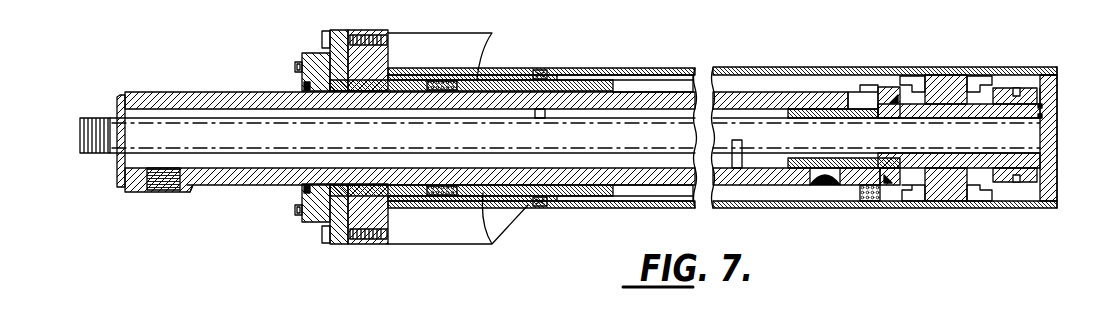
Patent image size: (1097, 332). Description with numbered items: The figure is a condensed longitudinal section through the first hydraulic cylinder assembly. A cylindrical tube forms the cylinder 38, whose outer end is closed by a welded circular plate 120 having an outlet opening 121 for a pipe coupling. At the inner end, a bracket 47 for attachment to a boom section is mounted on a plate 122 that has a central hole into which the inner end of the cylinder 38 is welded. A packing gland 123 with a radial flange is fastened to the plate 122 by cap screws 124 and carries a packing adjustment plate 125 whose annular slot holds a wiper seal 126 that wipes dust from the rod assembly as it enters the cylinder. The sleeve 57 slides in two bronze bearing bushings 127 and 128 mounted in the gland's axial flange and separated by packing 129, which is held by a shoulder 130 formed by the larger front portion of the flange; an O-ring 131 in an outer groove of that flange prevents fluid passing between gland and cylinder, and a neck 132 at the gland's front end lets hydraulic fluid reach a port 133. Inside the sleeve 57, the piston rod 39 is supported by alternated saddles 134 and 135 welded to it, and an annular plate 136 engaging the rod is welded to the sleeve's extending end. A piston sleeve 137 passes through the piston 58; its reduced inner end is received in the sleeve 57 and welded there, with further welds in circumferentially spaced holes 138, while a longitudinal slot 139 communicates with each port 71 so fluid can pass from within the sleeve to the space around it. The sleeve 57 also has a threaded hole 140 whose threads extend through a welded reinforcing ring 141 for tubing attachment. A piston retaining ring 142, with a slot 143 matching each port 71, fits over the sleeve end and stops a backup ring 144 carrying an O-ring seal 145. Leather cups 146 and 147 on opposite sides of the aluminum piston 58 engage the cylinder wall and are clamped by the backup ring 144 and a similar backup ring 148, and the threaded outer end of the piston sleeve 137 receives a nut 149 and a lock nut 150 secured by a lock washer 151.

The cylinder 38 is at (640, 68).
The piston rod 39 is at (108, 125).
The bracket 47 is at (440, 33).
The sleeve 57 is at (215, 92).
The piston 58 is at (945, 85).
The port 71 is at (853, 95).
The circular plate 120 is at (1052, 163).
The outlet opening 121 is at (1057, 100).
The plate 122 is at (388, 50).
The packing gland 123 is at (340, 220).
The cap screws 124 is at (326, 34).
The packing adjustment plate 125 is at (305, 60).
The wiper seal 126 is at (306, 84).
The bearing bushing 127 is at (410, 192).
The bearing bushing 128 is at (459, 225).
The packing 129 is at (443, 80).
The shoulder 130 is at (528, 72).
The O-ring 131 is at (538, 70).
The neck 132 is at (585, 80).
The port 133 is at (595, 208).
The saddle 134 is at (536, 114).
The saddle 135 is at (742, 148).
The annular plate 136 is at (118, 100).
The piston sleeve 137 is at (950, 160).
The holes 138 is at (820, 186).
The longitudinal slot 139 is at (800, 109).
The threaded hole 140 is at (162, 182).
The reinforcing ring 141 is at (190, 192).
The piston retaining ring 142 is at (870, 198).
The slot 143 is at (868, 85).
The backup ring 144 is at (912, 197).
The O-ring seal 145 is at (890, 163).
The leather cup 146 is at (912, 78).
The leather cup 147 is at (985, 78).
The backup ring 148 is at (985, 199).
The nut 149 is at (1015, 95).
The lock nut 150 is at (1056, 72).
The lock washer 151 is at (1015, 183).